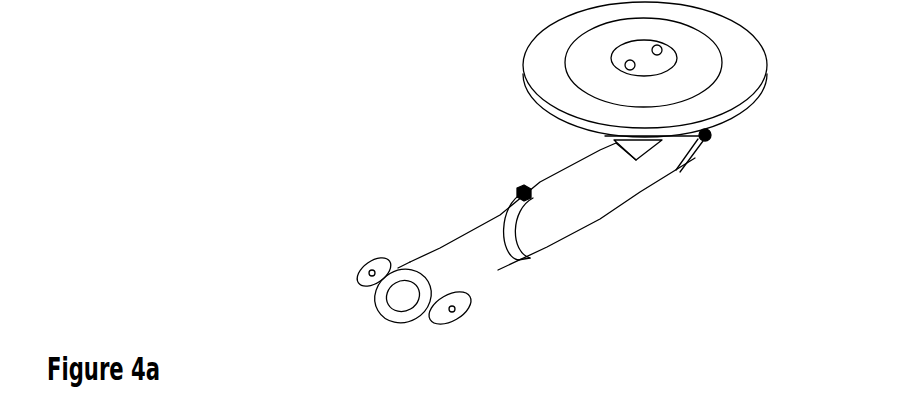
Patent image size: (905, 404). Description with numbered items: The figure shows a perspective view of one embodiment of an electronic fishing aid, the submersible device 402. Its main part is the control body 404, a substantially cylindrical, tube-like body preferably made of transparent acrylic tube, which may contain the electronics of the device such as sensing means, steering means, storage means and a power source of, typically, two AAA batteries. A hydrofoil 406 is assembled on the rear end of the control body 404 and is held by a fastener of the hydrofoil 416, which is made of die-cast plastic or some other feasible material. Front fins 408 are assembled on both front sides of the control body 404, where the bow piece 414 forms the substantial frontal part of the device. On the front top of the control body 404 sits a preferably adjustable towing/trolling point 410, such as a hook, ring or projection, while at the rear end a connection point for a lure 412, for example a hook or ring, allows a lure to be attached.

The submersible device 402 is at (530, 146).
The control body 404 is at (618, 208).
The hydrofoil 406 is at (533, 45).
The front fins 408 is at (367, 264).
The towing/trolling point 410 is at (517, 194).
The connection point for a lure 412 is at (708, 136).
The bow piece 414 is at (378, 311).
The fastener of the hydrofoil 416 is at (690, 142).